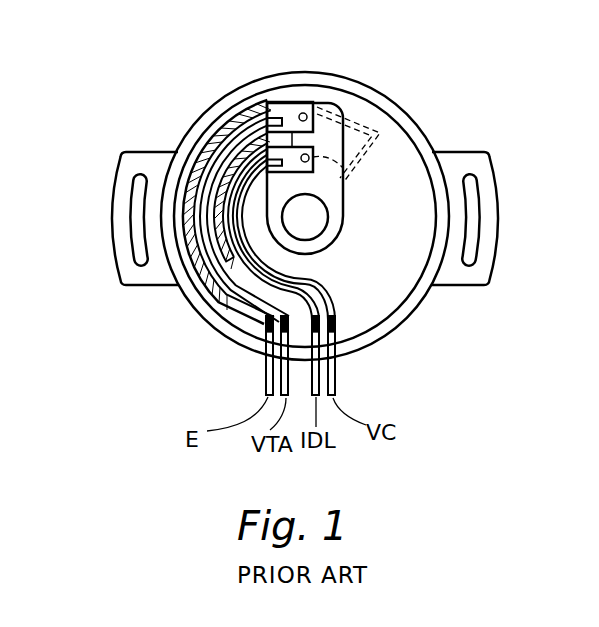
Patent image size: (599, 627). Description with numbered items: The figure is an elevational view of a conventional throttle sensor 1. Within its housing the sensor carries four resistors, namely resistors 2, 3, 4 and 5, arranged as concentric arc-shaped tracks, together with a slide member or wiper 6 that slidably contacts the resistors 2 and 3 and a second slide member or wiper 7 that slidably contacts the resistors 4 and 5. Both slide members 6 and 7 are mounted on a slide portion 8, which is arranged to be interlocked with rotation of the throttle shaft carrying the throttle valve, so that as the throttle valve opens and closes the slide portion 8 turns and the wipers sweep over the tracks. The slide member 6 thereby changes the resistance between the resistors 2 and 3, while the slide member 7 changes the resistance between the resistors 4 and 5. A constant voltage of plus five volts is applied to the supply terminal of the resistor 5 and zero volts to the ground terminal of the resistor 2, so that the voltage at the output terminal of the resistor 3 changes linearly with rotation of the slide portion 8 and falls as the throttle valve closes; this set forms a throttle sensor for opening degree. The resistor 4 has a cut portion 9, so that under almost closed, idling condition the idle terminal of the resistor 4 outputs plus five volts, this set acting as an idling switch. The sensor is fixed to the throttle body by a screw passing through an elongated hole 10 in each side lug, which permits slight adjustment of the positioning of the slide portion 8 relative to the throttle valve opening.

The throttle sensor 1 is at (407, 110).
The resistor 2 is at (200, 132).
The resistor 3 is at (213, 152).
The resistor 4 is at (233, 150).
The resistor 5 is at (257, 152).
The slide member 6 is at (273, 104).
The slide member 7 is at (292, 134).
The slide portion 8 is at (322, 128).
The cut portion 9 is at (200, 297).
The elongated hole 10 is at (140, 193).